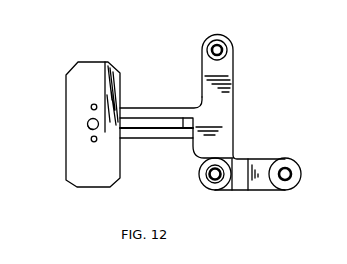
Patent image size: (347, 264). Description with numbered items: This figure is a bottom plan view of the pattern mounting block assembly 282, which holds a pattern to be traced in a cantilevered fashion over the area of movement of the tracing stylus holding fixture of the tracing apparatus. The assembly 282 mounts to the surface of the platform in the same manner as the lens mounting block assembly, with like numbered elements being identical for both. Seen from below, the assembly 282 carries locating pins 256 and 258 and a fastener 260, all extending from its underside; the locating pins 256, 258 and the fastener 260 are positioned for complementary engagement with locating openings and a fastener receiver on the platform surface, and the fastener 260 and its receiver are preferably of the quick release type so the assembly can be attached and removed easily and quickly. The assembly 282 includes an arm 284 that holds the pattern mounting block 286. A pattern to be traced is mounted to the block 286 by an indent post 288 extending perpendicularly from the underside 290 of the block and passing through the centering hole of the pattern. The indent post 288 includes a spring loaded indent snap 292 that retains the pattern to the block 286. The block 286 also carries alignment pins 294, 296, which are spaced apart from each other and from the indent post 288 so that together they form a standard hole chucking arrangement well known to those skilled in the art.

The locating pin 256 is at (209, 48).
The locating pin 258 is at (288, 170).
The fastener 260 is at (219, 178).
The pattern mounting block assembly 282 is at (266, 82).
The arm 284 is at (168, 108).
The pattern mounting block 286 is at (98, 188).
The indent post 288 is at (88, 127).
The underside 290 is at (80, 158).
The spring loaded indent snap 292 is at (87, 123).
The alignment pin 294 is at (97, 140).
The alignment pin 296 is at (93, 104).